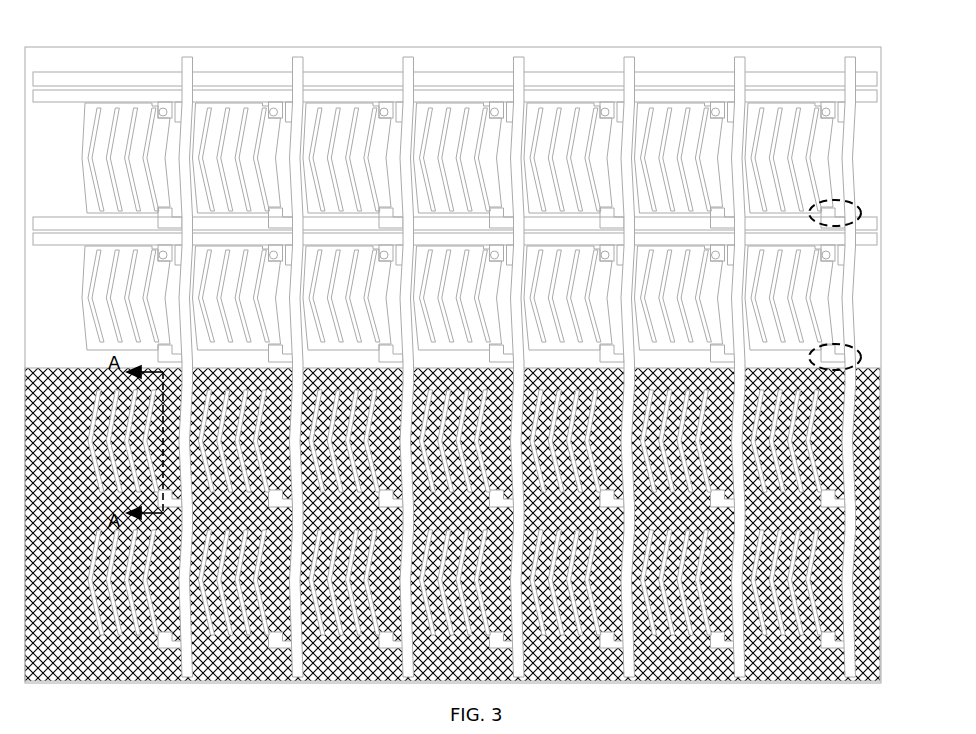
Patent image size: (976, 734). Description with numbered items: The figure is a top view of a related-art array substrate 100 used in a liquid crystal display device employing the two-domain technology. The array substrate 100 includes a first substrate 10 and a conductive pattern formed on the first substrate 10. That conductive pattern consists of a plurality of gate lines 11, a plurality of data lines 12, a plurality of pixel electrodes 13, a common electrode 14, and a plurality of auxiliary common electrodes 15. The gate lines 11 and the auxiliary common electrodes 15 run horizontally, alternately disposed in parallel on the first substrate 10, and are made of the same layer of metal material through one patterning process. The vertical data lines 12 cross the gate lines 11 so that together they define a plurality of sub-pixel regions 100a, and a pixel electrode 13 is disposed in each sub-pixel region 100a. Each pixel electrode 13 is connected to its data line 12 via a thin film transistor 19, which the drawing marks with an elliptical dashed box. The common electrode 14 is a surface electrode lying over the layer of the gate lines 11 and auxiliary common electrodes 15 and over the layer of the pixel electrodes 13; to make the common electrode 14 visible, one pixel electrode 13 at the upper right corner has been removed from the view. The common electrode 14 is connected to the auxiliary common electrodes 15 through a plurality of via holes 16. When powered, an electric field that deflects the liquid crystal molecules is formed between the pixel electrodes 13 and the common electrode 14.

The array substrate 100 is at (925, 40).
The sub-pixel region 100a is at (842, 564).
The first substrate 10 is at (793, 52).
The gate line 11 is at (876, 79).
The data line 12 is at (849, 295).
The pixel electrode 13 is at (815, 443).
The common electrode 14 is at (873, 168).
The auxiliary common electrode 15 is at (874, 99).
The via hole 16 is at (830, 112).
The thin film transistor 19 is at (863, 203).